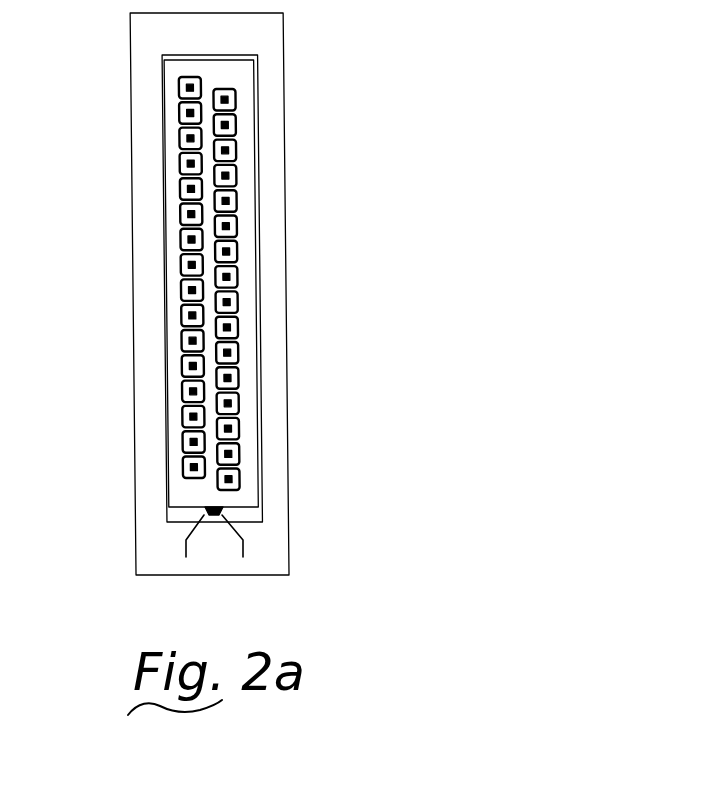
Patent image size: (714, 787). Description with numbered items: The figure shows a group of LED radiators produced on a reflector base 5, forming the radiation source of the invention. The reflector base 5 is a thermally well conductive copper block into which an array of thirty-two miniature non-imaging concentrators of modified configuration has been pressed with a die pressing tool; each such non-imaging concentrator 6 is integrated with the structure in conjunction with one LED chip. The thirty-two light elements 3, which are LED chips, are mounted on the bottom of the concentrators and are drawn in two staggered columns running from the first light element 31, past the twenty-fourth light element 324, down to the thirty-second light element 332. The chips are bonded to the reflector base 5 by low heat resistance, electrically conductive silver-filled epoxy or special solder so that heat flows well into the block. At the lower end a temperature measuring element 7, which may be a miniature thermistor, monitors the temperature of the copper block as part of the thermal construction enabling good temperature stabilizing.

The light elements 3 is at (220, 283).
The first light element 31 is at (185, 88).
The twenty-fourth light element 324 is at (190, 392).
The thirty-second light element 332 is at (233, 478).
The reflector base 5 is at (258, 213).
The non-imaging concentrator 6 is at (237, 352).
The temperature measuring element 7 is at (212, 527).